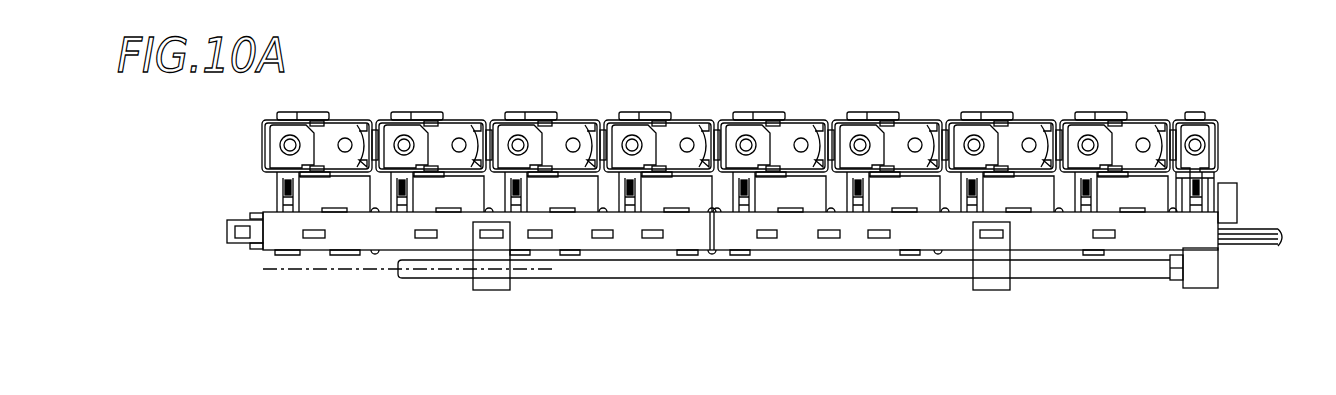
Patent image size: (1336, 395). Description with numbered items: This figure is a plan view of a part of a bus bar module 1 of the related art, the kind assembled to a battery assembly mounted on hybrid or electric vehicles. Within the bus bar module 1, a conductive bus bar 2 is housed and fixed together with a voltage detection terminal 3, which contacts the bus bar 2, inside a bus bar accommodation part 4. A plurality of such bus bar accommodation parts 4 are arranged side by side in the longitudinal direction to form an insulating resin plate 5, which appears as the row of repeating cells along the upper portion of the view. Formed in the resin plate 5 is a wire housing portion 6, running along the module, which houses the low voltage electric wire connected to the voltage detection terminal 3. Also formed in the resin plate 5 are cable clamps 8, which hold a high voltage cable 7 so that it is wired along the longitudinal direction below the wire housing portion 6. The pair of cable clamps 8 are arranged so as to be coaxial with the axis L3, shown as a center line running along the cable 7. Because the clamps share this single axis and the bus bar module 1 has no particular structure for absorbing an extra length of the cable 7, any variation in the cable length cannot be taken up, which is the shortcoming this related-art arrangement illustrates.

The bus bar module 1 is at (1075, 75).
The bus bar 2 is at (794, 127).
The voltage detection terminal 3 is at (730, 128).
The bus bar accommodation part 4 is at (775, 117).
The resin plate 5 is at (585, 121).
The wire housing portion 6 is at (1148, 232).
The high voltage cable 7 is at (752, 263).
The cable clamps 8 is at (490, 291).
The axis L3 is at (316, 300).